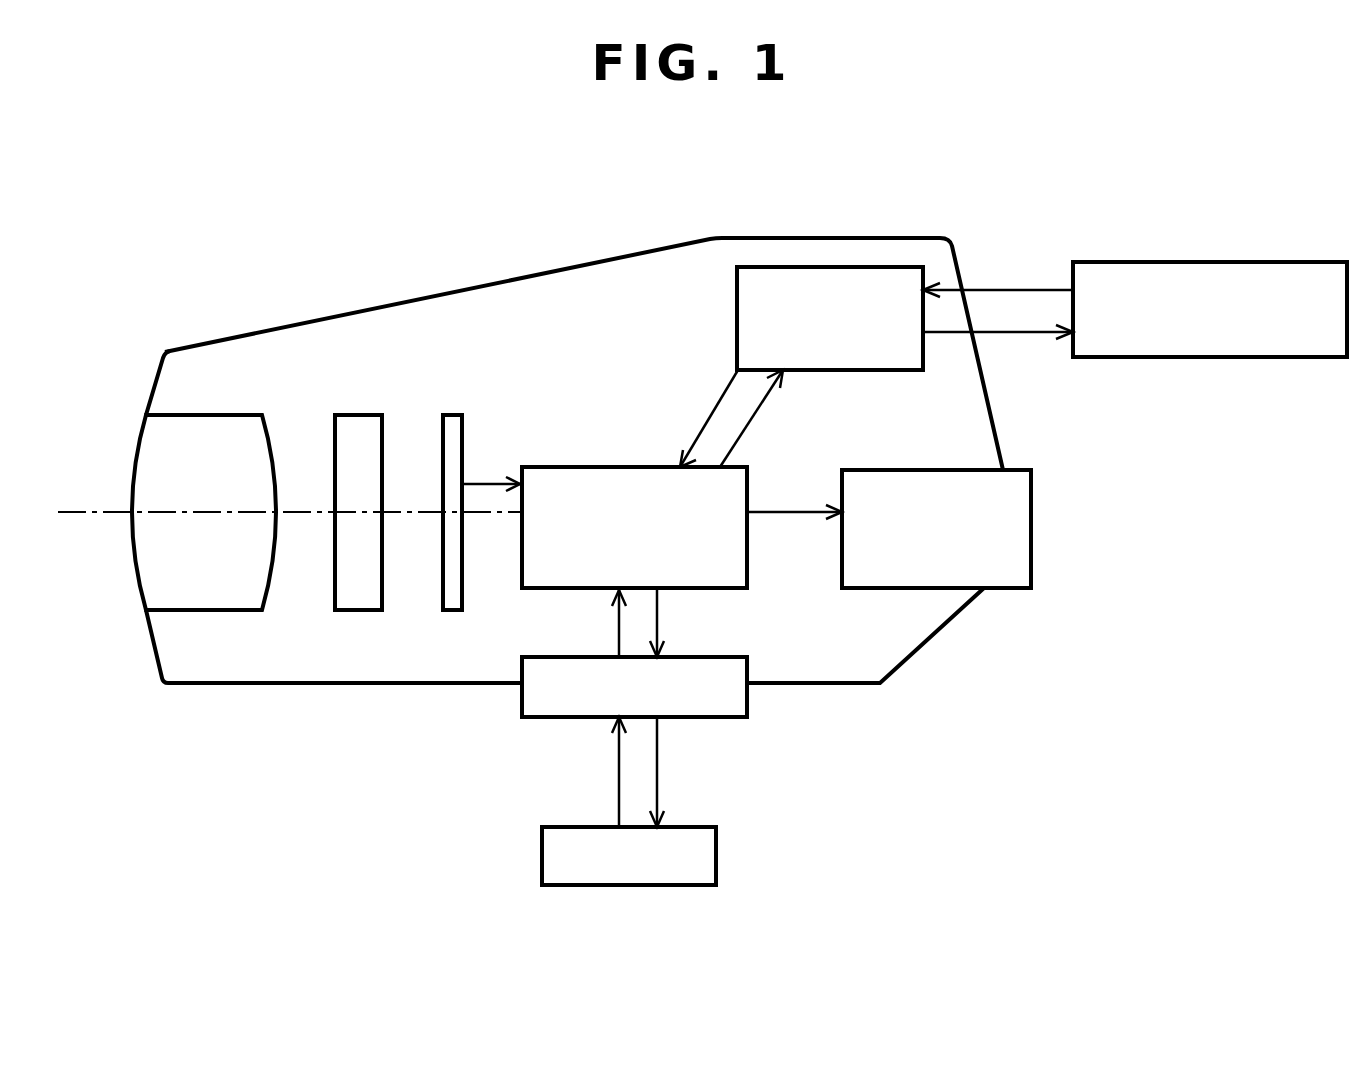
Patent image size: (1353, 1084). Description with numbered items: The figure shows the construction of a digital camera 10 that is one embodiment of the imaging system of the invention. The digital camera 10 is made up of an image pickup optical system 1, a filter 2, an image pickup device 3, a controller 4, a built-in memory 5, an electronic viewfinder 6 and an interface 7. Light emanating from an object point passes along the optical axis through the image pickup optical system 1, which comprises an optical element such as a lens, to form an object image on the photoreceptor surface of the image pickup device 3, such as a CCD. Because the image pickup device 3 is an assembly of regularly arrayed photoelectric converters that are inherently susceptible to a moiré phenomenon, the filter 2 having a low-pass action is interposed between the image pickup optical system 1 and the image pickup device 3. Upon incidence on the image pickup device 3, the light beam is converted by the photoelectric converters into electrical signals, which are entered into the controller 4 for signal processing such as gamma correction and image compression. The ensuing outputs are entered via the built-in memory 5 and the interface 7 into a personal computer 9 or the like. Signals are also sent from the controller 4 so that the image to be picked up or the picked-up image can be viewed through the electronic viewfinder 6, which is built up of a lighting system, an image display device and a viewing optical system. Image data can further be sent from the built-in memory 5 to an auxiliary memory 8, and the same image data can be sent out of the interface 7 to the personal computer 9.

The image pickup optical system 1 is at (214, 600).
The filter 2 is at (360, 427).
The image pickup device 3 is at (454, 427).
The controller 4 is at (634, 482).
The built-in memory 5 is at (834, 275).
The electronic viewfinder 6 is at (1023, 531).
The interface 7 is at (710, 700).
The auxiliary memory 8 is at (1214, 265).
The personal computer 9 is at (640, 880).
The digital camera 10 is at (933, 640).